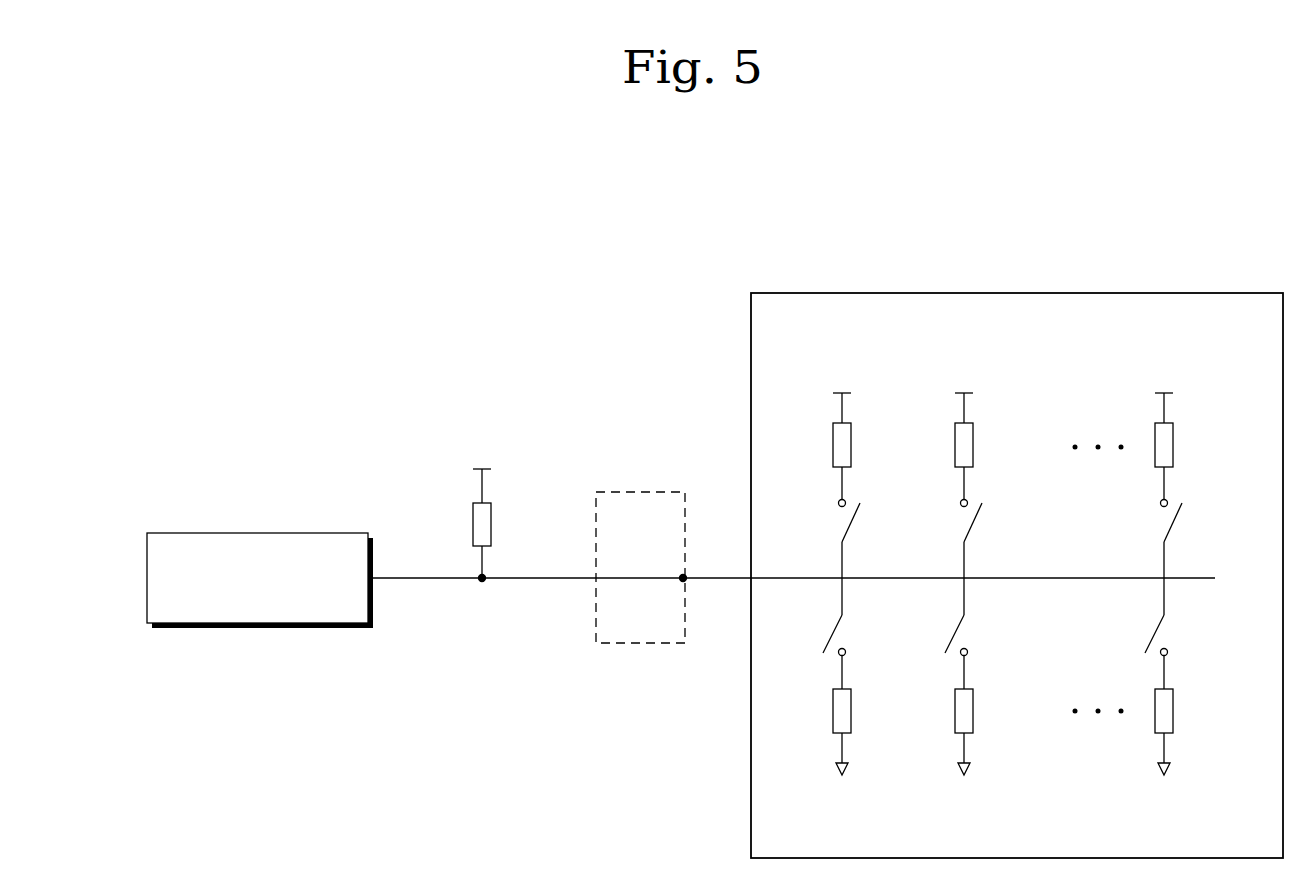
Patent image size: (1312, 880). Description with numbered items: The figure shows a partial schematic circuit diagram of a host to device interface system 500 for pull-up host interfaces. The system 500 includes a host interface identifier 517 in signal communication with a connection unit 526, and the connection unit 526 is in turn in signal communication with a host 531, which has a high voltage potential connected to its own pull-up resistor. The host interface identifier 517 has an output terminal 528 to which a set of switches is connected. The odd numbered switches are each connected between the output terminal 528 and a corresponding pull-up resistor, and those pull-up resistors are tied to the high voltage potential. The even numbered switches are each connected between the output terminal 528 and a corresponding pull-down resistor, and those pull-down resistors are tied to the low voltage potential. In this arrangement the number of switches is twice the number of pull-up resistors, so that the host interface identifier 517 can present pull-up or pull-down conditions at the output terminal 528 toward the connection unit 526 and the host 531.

The interface system 500 is at (656, 264).
The host interface identifier 517 is at (1037, 332).
The connection unit 526 is at (660, 531).
The output terminal 528 is at (684, 572).
The host 531 is at (146, 578).